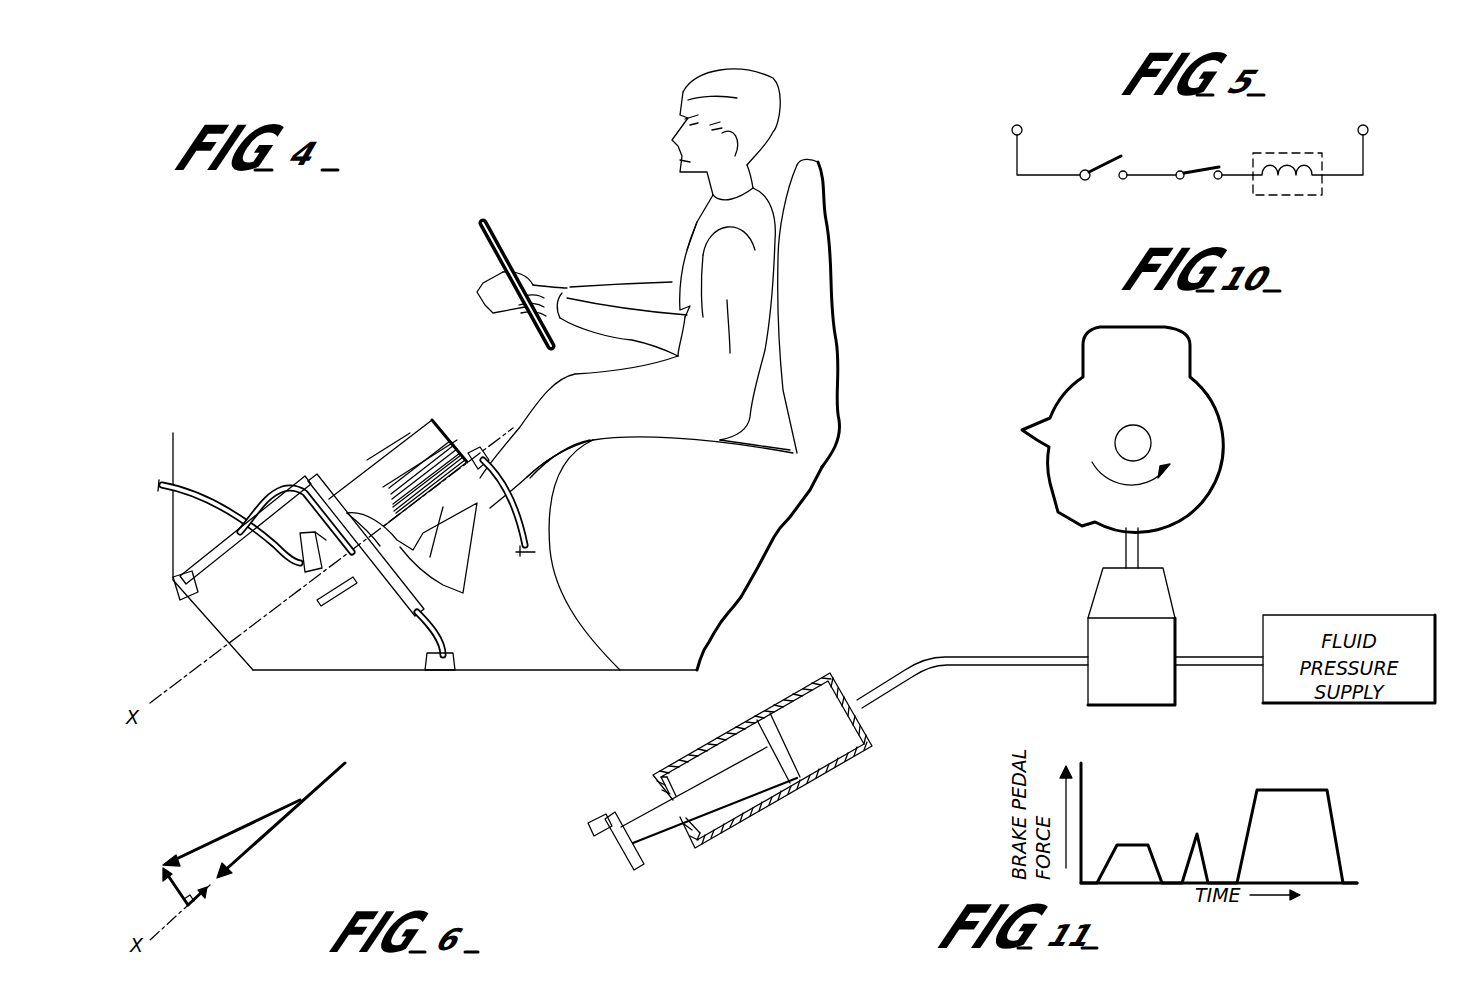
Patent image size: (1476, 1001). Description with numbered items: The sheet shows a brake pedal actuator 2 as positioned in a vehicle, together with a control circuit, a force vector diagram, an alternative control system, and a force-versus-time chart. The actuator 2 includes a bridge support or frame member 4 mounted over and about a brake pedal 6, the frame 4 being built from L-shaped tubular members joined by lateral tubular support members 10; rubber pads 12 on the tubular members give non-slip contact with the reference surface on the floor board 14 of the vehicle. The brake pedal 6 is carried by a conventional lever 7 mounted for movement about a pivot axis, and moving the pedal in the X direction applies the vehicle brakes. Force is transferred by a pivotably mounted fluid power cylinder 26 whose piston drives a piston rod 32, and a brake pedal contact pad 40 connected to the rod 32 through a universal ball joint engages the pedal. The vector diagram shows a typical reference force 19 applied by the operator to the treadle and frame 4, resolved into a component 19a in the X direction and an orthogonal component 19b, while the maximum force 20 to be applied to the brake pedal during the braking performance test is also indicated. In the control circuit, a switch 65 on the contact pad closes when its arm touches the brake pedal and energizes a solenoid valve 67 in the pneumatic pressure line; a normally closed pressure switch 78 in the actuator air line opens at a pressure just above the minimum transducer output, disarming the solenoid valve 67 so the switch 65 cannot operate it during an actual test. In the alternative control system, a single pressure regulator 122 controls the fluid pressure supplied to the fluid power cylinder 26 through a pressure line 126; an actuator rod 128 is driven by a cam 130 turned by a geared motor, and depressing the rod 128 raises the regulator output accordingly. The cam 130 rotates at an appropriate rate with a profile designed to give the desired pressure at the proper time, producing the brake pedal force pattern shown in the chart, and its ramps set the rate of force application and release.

In FIG. 4, the brake pedal actuator 2 is at (333, 470).
In FIG. 4, the bridge support or frame member 4 is at (263, 510).
In FIG. 4, the brake pedal 6 is at (300, 570).
In FIG. 4, the lever 7 is at (197, 492).
In FIG. 4, the lateral tubular support members 10 is at (310, 505).
In FIG. 4, the rubber pads 12 is at (180, 590).
In FIG. 4, the floor board 14 is at (347, 667).
In FIG. 6, the reference force 19 is at (232, 830).
In FIG. 6, the component in the X direction 19a is at (197, 905).
In FIG. 6, the orthogonal component 19b is at (170, 893).
In FIG. 6, the maximum force 20 is at (257, 843).
In FIG. 4, the fluid power cylinder 26 is at (400, 440).
In FIG. 10, the fluid power cylinder 26 is at (790, 697).
In FIG. 10, the piston rod 32 is at (655, 835).
In FIG. 10, the brake pedal contact pad 40 is at (615, 813).
In FIG. 5, the switch 65 is at (1193, 170).
In FIG. 5, the solenoid valve 67 is at (1295, 165).
In FIG. 5, the pressure switch 78 is at (1100, 165).
In FIG. 10, the pressure regulator 122 is at (1103, 635).
In FIG. 10, the pressure line 126 is at (980, 655).
In FIG. 10, the actuator rod 128 is at (1140, 547).
In FIG. 10, the cam 130 is at (1207, 420).